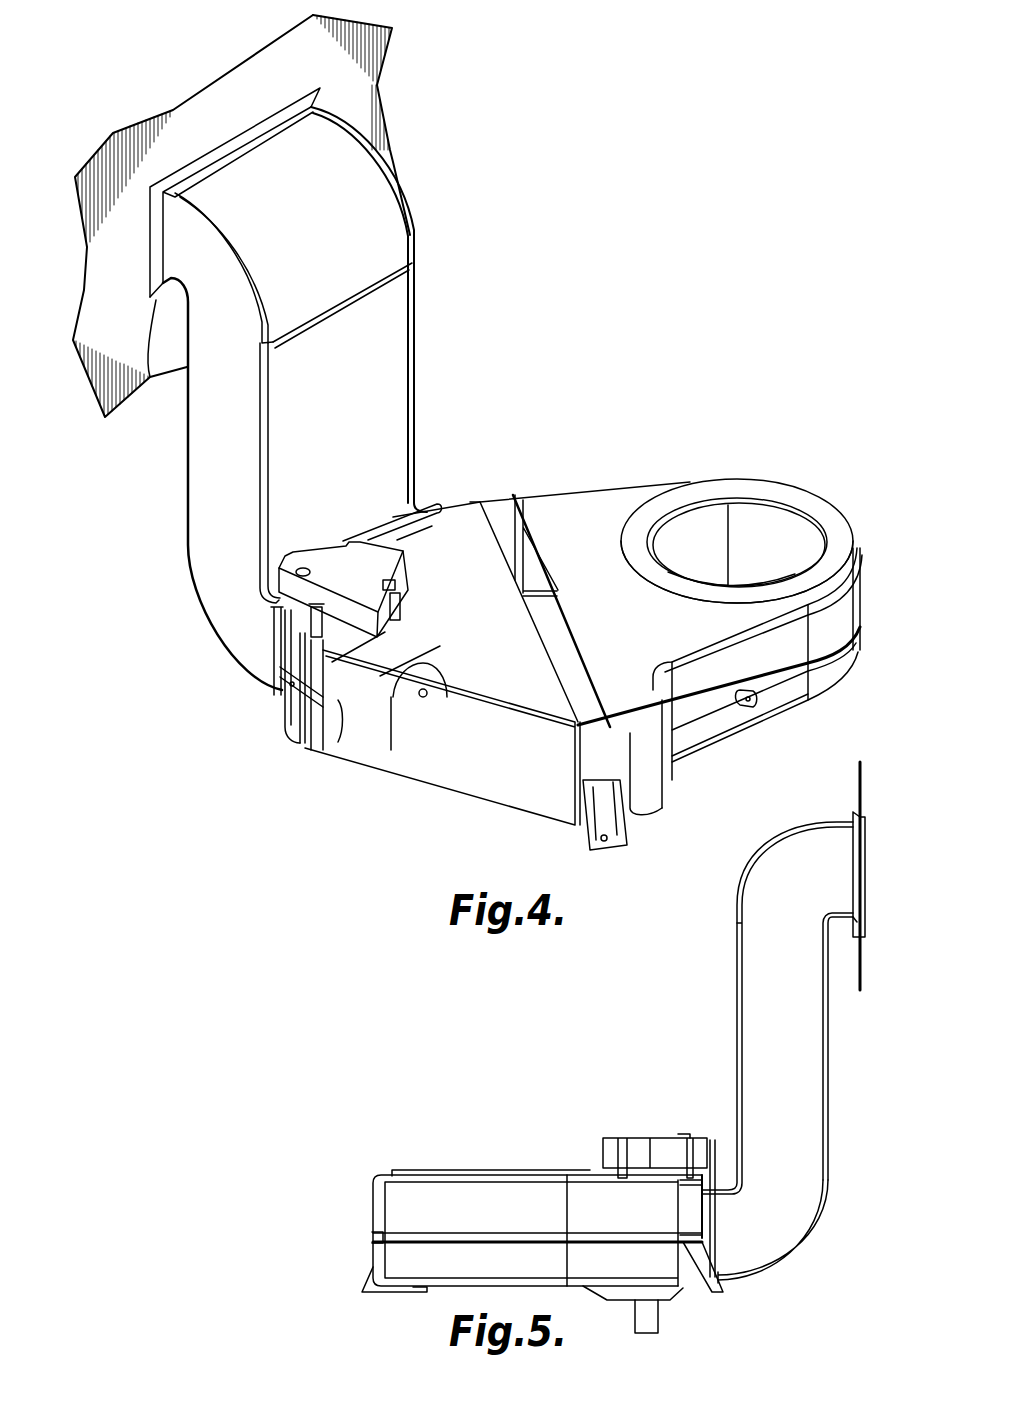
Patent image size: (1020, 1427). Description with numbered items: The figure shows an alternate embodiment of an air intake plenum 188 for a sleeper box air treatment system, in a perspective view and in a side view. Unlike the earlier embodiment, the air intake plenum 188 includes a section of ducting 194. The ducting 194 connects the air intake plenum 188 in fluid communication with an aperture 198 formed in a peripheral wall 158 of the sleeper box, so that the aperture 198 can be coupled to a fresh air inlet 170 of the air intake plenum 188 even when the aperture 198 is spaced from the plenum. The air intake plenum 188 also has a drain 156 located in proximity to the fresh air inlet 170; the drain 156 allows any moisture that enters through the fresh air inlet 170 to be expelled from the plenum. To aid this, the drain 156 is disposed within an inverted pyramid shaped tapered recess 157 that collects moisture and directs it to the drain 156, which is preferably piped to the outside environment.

In FIG. 4, the drain 156 is at (403, 695).
In FIG. 5, the drain 156 is at (658, 1317).
In FIG. 4, the tapered recess 157 is at (347, 703).
In FIG. 4, the peripheral wall 158 is at (253, 72).
In FIG. 5, the peripheral wall 158 is at (858, 782).
In FIG. 4, the fresh air inlet 170 is at (433, 513).
In FIG. 5, the fresh air inlet 170 is at (717, 1172).
In FIG. 4, the air intake plenum 188 is at (636, 291).
In FIG. 5, the air intake plenum 188 is at (509, 1099).
In FIG. 4, the ducting 194 is at (414, 327).
In FIG. 5, the ducting 194 is at (833, 1073).
In FIG. 4, the aperture 198 is at (151, 378).